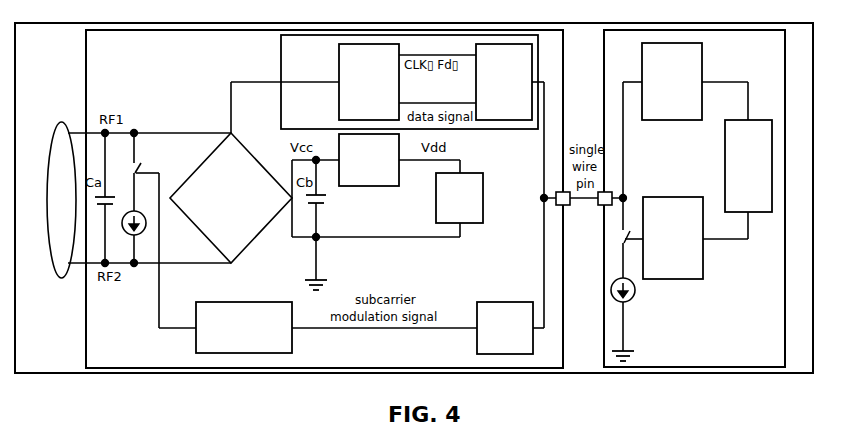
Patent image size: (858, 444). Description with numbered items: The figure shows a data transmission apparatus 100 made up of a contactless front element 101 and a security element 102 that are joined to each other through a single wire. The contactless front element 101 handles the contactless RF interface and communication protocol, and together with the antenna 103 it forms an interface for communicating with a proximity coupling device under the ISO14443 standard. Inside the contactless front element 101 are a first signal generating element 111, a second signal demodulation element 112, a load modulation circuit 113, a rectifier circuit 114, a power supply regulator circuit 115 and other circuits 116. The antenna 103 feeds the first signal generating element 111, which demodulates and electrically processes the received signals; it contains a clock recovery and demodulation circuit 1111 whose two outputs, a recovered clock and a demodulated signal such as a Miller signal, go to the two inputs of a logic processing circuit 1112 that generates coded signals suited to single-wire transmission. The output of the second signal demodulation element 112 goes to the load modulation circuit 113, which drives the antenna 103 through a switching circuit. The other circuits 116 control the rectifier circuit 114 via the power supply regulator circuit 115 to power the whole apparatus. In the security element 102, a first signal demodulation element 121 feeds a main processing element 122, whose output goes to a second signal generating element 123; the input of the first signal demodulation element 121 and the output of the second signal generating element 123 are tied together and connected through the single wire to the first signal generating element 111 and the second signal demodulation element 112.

The data transmission apparatus 100 is at (414, 198).
The contactless front element 101 is at (324, 199).
The security element 102 is at (694, 198).
The antenna 103 is at (61, 200).
The first signal generating element 111 is at (409, 82).
The clock recovery and demodulation circuit 1111 is at (369, 82).
The logic processing circuit 1112 is at (504, 82).
The second signal demodulation element 112 is at (505, 328).
The load modulation circuit 113 is at (244, 327).
The rectifier circuit 114 is at (231, 198).
The power supply regulator circuit 115 is at (369, 160).
The other circuits 116 is at (459, 198).
The first signal demodulation element 121 is at (672, 81).
The main processing element 122 is at (748, 166).
The second signal generating element 123 is at (673, 238).